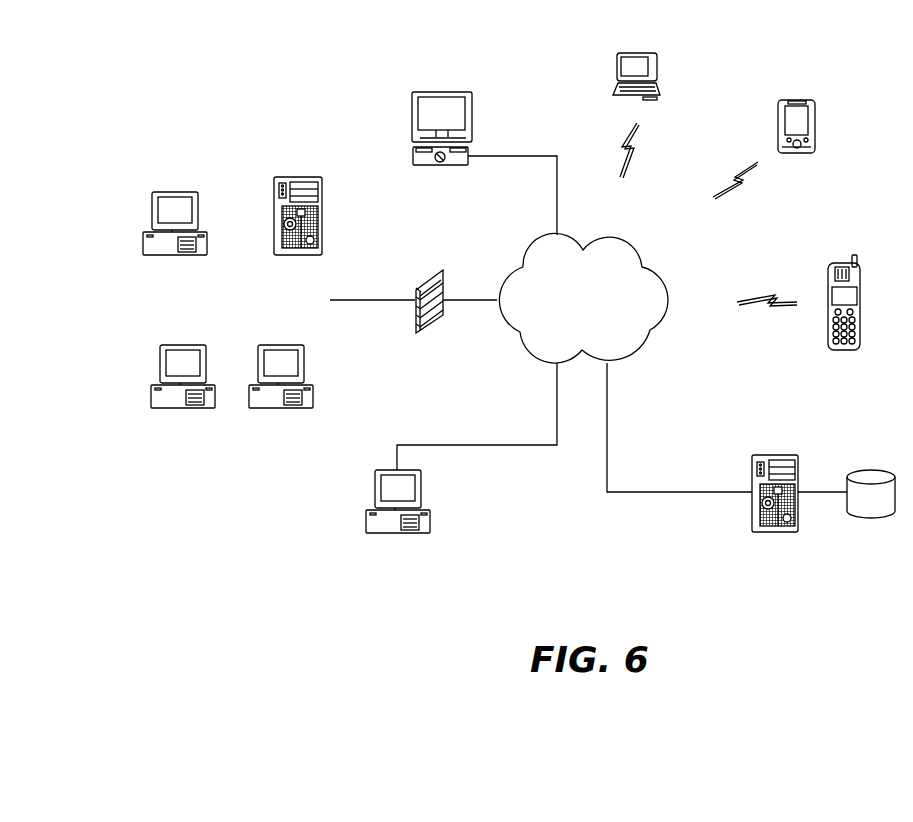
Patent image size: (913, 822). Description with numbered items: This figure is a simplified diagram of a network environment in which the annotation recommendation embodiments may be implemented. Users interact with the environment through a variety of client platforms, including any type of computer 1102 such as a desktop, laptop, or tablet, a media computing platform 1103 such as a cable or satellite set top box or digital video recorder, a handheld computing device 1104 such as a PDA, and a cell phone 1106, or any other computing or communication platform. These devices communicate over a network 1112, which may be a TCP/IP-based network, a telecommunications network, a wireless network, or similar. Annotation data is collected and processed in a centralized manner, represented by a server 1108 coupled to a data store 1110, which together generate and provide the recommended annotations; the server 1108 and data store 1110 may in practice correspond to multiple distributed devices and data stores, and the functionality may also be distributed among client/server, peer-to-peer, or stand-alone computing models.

The computer 1102 is at (150, 215).
The media computing platform 1103 is at (413, 152).
The handheld computing device 1104 is at (782, 102).
The cell phone 1106 is at (832, 270).
The server 1108 is at (757, 455).
The data store 1110 is at (870, 470).
The network 1112 is at (532, 247).